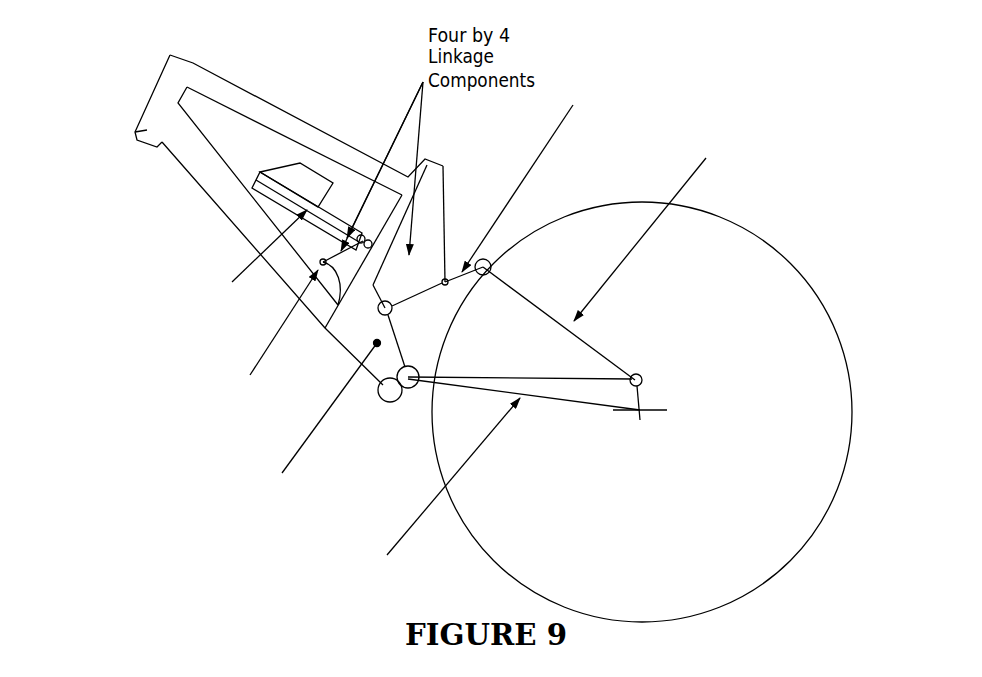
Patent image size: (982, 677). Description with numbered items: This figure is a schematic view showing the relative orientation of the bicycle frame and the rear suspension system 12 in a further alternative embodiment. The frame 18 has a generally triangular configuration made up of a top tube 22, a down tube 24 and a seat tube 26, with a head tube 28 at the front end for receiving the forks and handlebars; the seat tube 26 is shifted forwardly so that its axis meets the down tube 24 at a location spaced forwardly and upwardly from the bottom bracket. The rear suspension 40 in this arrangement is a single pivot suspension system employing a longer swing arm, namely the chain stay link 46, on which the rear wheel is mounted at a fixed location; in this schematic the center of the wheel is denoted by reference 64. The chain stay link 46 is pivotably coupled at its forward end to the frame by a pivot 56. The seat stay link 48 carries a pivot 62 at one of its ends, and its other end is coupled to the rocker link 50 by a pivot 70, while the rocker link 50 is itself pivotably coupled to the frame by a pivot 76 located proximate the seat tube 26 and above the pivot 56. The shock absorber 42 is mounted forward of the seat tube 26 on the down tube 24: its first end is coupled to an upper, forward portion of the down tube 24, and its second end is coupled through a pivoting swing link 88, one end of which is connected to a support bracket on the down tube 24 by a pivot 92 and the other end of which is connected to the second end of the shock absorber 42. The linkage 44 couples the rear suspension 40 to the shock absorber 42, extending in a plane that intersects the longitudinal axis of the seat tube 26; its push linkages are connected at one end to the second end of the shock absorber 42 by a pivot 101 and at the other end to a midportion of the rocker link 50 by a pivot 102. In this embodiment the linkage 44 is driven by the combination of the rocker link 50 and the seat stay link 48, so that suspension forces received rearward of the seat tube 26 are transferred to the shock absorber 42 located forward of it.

The rear suspension system 12 is at (643, 142).
The frame 18 is at (298, 254).
The top tube 22 is at (283, 118).
The down tube 24 is at (207, 177).
The seat tube 26 is at (430, 182).
The head tube 28 is at (147, 130).
The rear suspension 40 is at (543, 422).
The shock absorber 42 is at (241, 248).
The linkage 44 is at (425, 266).
The chain stay link 46 is at (390, 493).
The seat stay link 48 is at (661, 256).
The rocker arm link 50 is at (567, 177).
The pivot 56 is at (408, 390).
The pivot 62 is at (642, 377).
The center of wheel 64 is at (642, 414).
The pivot 70 is at (490, 262).
The pivot 76 is at (363, 250).
The pivoting swing link 88 is at (338, 308).
The pivot 92 is at (318, 275).
The pivot 101 is at (443, 163).
The pivot 102 is at (445, 279).